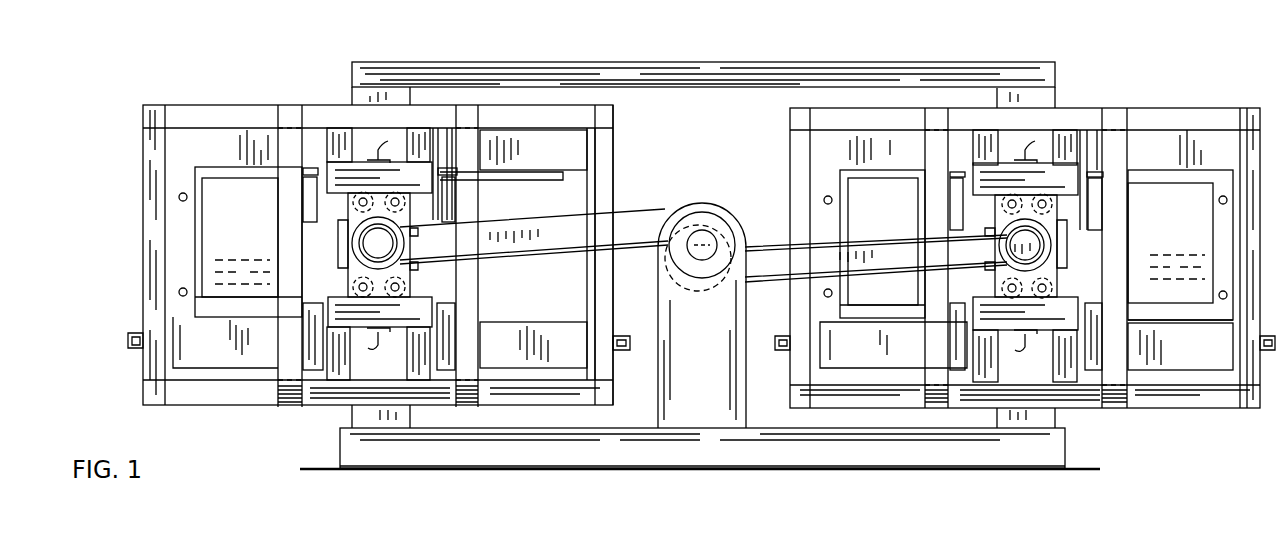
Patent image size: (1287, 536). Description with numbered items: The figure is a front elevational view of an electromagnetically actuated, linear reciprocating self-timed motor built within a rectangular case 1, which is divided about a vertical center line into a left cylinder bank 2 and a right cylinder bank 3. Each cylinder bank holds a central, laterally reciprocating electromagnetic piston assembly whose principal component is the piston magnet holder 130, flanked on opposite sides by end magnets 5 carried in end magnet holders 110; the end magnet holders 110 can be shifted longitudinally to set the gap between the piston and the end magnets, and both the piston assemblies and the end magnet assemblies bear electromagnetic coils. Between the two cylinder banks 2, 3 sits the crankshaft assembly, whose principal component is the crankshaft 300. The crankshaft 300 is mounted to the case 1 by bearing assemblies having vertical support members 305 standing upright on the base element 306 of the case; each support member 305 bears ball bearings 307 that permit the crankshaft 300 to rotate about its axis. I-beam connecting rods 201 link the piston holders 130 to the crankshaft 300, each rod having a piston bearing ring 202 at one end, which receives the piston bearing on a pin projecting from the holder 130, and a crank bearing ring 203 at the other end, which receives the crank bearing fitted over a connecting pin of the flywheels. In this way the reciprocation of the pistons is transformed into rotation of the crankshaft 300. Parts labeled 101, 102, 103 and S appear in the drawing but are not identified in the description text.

The rectangular case 1 is at (683, 472).
The left cylinder bank 2 is at (270, 106).
The right cylinder bank 3 is at (1093, 108).
The end magnets 5 is at (590, 150).
The frame of first station 101 is at (205, 108).
The post foot / guide 102 is at (288, 385).
The frame side post 103 is at (615, 302).
The end magnet holder 110 is at (566, 370).
The piston magnet holder 130 is at (414, 279).
The I-beam connecting rod 201 is at (628, 218).
The piston bearing ring 202 is at (383, 223).
The crank bearing ring 203 is at (690, 208).
The crankshaft 300 is at (700, 260).
The vertical support member 305 is at (733, 380).
The base element 306 is at (845, 448).
The ball bearing 307 is at (722, 226).
The ground surface S is at (1077, 478).